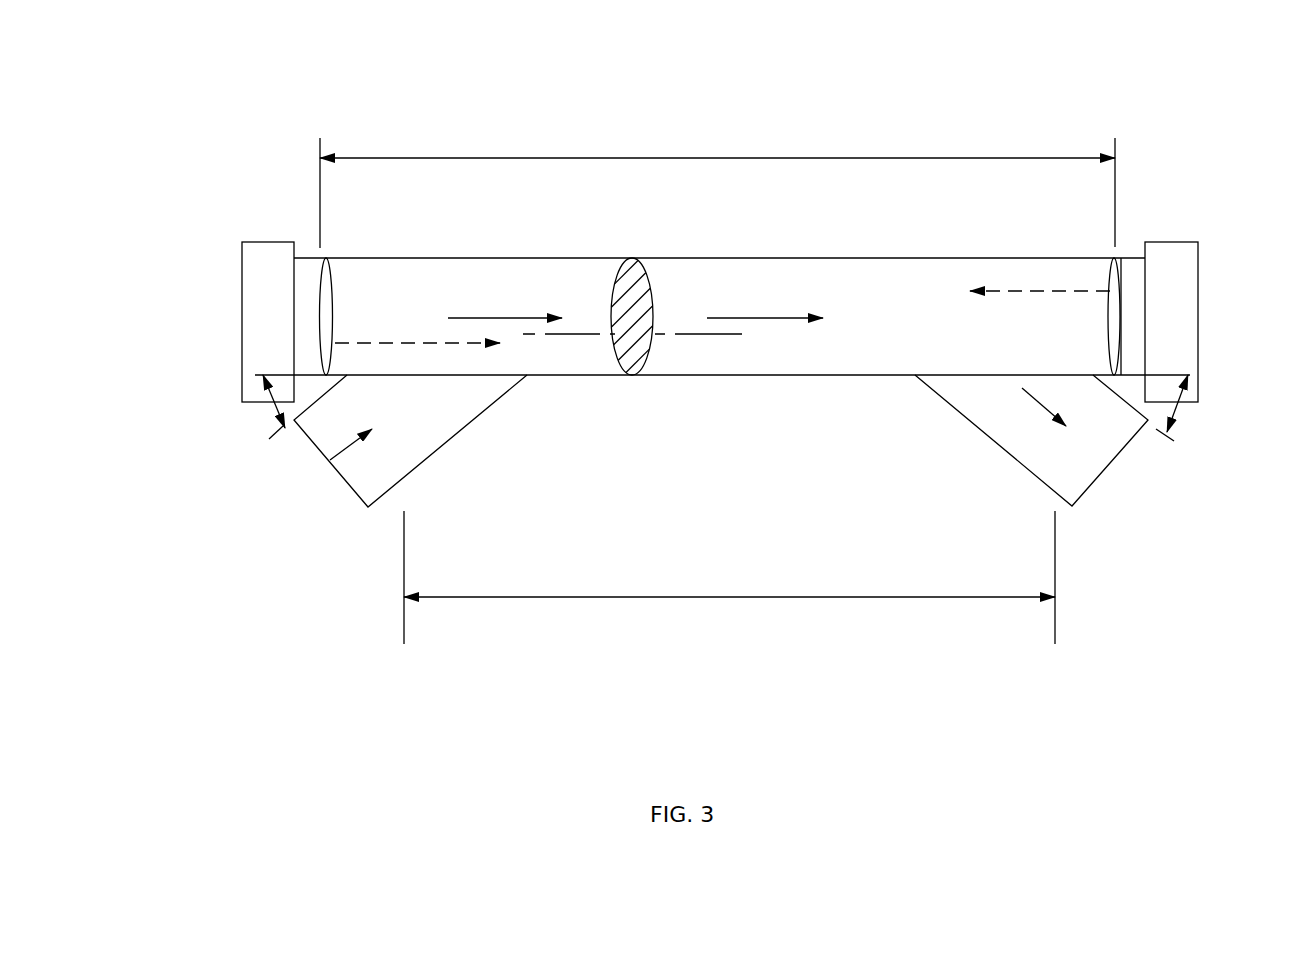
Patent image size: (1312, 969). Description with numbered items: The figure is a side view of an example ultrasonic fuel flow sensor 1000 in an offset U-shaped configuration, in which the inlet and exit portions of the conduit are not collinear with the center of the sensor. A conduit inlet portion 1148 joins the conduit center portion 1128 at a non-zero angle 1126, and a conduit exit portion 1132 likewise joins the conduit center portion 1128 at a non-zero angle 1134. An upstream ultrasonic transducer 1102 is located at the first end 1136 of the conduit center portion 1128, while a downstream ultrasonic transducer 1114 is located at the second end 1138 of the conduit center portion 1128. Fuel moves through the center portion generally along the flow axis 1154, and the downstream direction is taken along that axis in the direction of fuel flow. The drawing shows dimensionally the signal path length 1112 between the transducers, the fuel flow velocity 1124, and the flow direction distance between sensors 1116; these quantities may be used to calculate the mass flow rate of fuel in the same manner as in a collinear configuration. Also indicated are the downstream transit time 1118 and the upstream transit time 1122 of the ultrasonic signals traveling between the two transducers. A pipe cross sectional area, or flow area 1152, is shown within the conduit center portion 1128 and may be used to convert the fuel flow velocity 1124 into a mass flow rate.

The ultrasonic fuel flow sensor 1000 is at (352, 110).
The upstream ultrasonic transducer 1102 is at (352, 258).
The downstream ultrasonic transducer 1114 is at (1107, 283).
The first end 1136 is at (364, 250).
The second end 1138 is at (1071, 255).
The conduit center portion 1128 is at (738, 283).
The flow area 1152 is at (632, 375).
The flow axis 1154 is at (596, 334).
The downstream transit time 1118 is at (399, 343).
The fuel flow velocity 1124 is at (760, 318).
The upstream transit time 1122 is at (1032, 290).
The conduit inlet portion 1148 is at (450, 440).
The conduit exit portion 1132 is at (993, 440).
The non-zero angle 1126 is at (262, 408).
The non-zero angle 1134 is at (1182, 408).
The signal path length 1112 is at (700, 158).
The flow direction distance between sensors 1116 is at (730, 597).